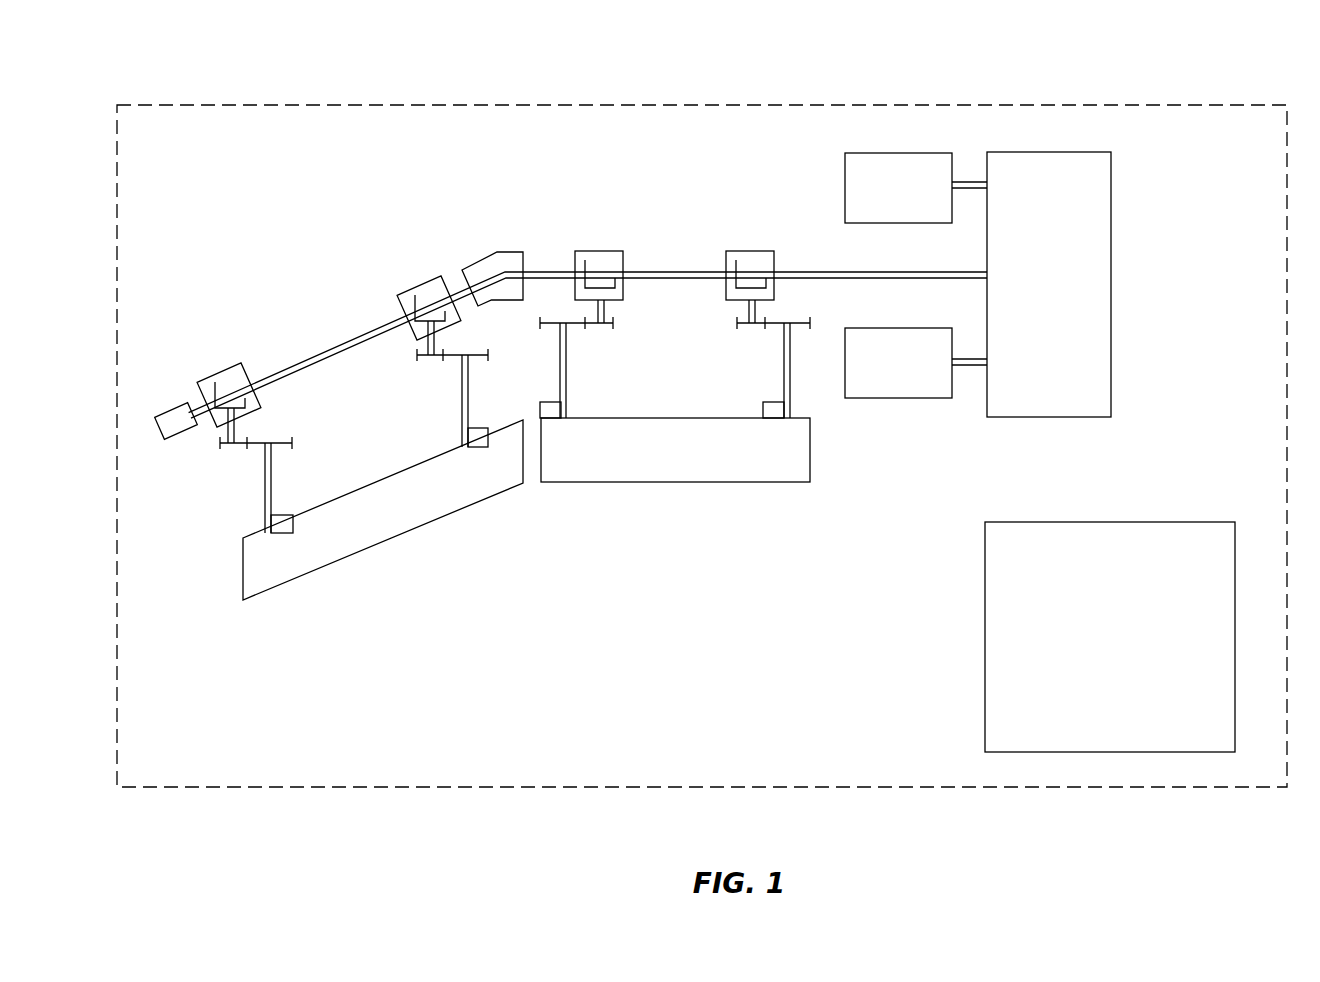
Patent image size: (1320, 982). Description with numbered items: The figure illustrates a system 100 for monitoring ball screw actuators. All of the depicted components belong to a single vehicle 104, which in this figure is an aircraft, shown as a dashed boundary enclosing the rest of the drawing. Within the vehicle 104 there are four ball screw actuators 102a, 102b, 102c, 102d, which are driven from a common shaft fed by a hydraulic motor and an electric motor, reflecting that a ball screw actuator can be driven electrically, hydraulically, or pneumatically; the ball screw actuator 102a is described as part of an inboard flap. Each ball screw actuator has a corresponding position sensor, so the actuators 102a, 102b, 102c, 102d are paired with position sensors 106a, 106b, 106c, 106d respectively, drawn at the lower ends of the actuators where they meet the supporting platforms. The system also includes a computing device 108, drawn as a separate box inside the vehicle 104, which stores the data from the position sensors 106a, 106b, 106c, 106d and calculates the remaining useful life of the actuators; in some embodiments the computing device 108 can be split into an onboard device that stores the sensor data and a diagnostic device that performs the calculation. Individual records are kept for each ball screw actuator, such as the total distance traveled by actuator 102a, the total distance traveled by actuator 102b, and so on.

The system 100 is at (155, 47).
The vehicle 104 is at (1057, 104).
The ball screw actuator 102a is at (790, 380).
The ball screw actuator 102b is at (568, 394).
The ball screw actuator 102c is at (473, 405).
The ball screw actuator 102d is at (275, 490).
The position sensor 106a is at (777, 420).
The position sensor 106b is at (553, 421).
The position sensor 106c is at (482, 449).
The position sensor 106d is at (285, 538).
The computing device 108 is at (1096, 673).